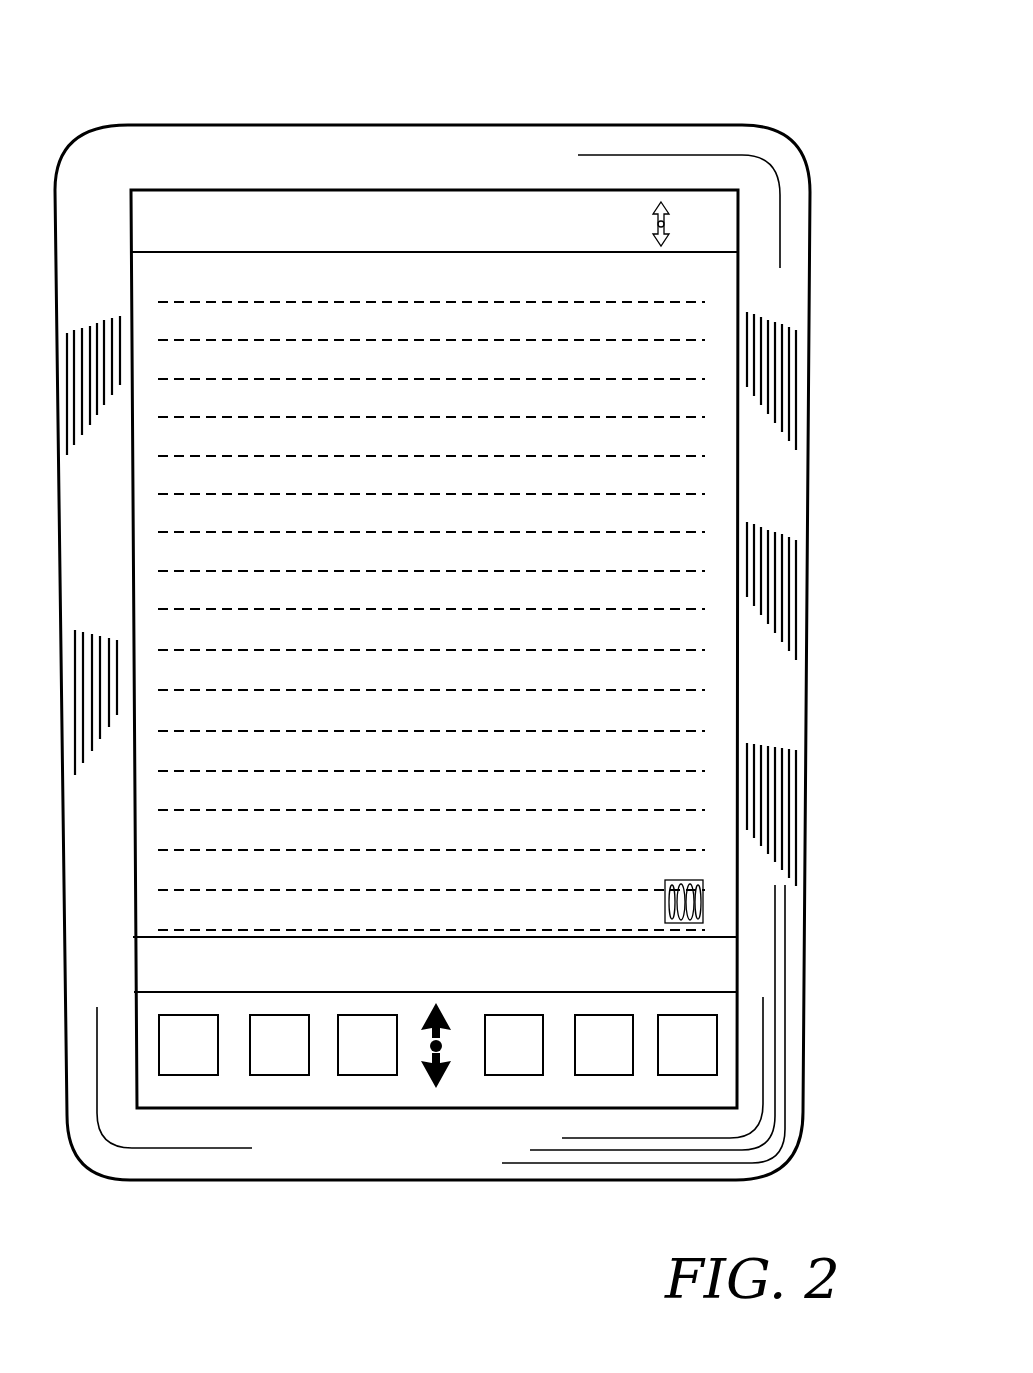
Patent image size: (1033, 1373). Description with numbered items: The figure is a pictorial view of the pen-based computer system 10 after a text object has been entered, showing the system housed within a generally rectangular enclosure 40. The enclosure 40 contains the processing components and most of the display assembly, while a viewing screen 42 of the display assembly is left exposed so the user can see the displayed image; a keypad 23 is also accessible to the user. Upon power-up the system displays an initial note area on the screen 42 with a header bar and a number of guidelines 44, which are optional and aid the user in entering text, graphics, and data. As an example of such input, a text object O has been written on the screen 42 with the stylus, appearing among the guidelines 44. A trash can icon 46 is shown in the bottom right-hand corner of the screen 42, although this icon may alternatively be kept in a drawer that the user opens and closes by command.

The pen-based computer system 10 is at (748, 84).
The keypad 23 is at (717, 1100).
The enclosure 40 is at (760, 511).
The viewing screen 42 is at (673, 750).
The guidelines 44 is at (663, 417).
The trash can icon 46 is at (686, 880).
The text object O is at (449, 480).